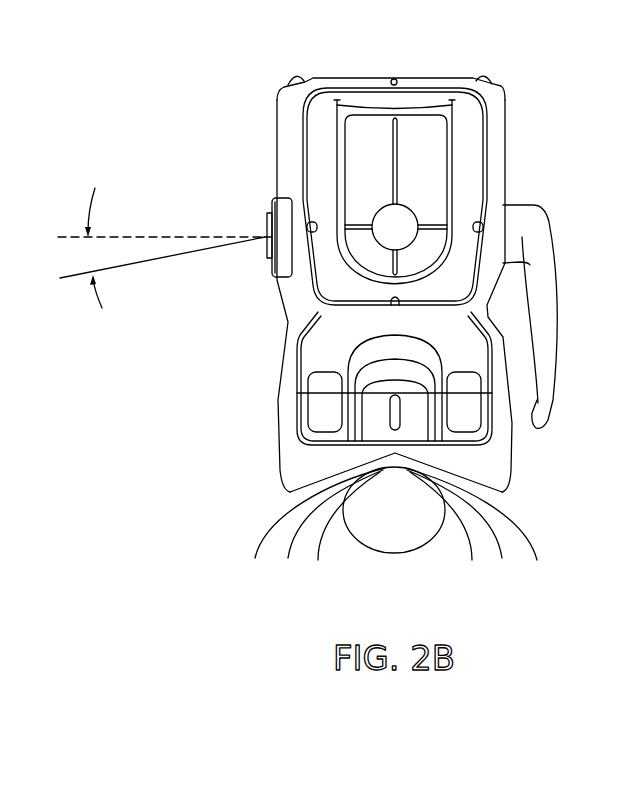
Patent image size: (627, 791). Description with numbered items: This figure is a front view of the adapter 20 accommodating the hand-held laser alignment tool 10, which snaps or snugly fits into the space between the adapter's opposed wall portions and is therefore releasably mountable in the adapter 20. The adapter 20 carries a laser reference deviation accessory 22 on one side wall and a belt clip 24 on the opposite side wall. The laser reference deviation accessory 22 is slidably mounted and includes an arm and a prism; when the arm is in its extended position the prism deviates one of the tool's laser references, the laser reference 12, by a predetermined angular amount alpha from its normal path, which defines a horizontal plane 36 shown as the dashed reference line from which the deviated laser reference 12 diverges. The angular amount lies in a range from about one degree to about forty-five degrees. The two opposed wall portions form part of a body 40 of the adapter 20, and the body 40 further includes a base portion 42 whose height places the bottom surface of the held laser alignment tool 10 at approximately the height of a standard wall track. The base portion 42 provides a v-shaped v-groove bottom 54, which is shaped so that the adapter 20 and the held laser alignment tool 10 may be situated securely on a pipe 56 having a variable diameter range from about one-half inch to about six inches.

The laser alignment tool 10 is at (370, 86).
The laser reference 12 is at (140, 265).
The adapter 20 is at (274, 93).
The laser reference deviation accessory 22 is at (260, 218).
The belt clip 24 is at (554, 283).
The horizontal plane 36 is at (62, 236).
The body 40 is at (280, 392).
The base portion 42 is at (272, 420).
The v-groove bottom 54 is at (495, 497).
The pipe 56 is at (257, 548).